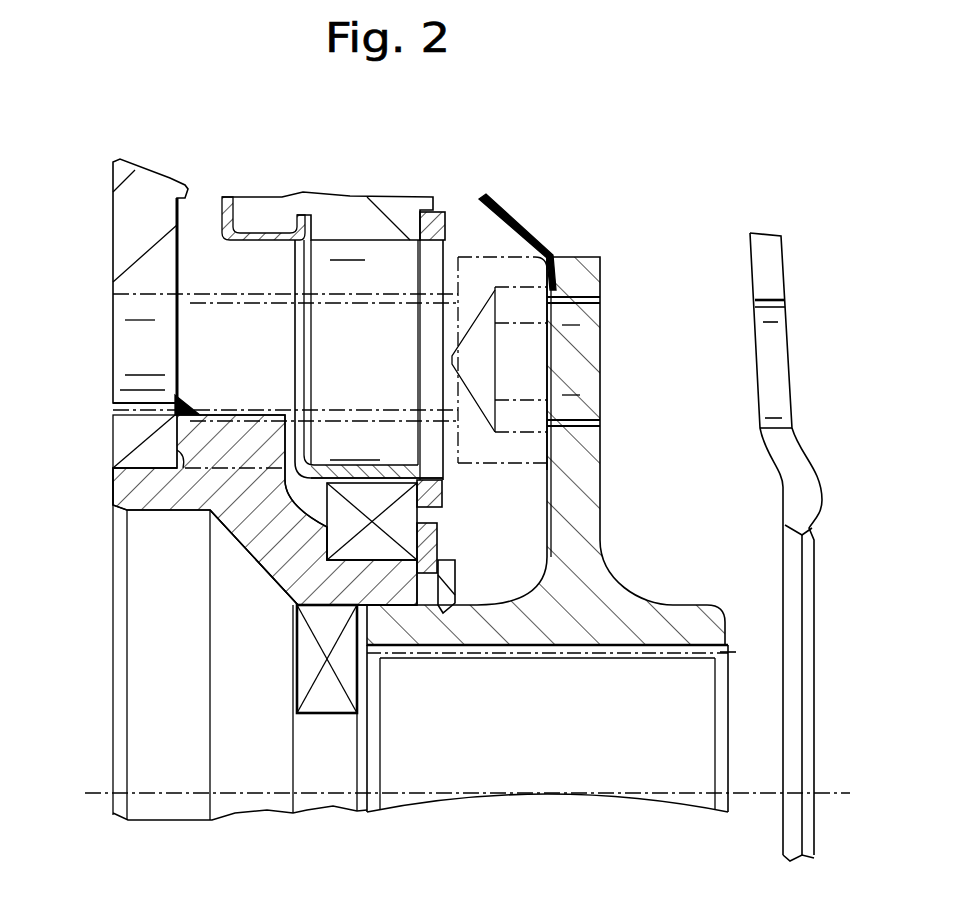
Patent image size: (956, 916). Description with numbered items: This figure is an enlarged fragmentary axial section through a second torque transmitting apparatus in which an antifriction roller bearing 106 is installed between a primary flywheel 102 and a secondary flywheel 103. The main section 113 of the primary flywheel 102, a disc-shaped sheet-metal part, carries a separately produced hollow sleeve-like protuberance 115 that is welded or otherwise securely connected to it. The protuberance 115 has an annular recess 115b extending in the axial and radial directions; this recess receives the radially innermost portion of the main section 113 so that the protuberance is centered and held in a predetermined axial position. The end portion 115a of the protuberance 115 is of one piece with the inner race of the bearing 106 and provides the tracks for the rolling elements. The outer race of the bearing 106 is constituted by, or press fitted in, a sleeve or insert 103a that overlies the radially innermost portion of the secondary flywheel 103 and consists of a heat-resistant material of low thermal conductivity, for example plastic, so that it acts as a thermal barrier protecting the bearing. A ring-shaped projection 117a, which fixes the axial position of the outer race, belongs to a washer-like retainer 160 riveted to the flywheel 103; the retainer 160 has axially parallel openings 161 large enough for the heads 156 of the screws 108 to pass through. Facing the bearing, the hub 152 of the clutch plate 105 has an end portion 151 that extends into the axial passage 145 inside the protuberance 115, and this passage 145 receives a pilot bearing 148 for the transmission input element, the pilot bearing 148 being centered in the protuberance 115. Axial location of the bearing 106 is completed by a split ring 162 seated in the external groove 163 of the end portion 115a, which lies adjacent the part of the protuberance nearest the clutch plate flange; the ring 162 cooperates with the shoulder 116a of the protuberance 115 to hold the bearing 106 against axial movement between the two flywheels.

The primary flywheel 102 is at (148, 190).
The main section 113 is at (130, 237).
The screws 108 is at (350, 290).
The secondary flywheel 103 is at (367, 223).
The retainer 160 is at (443, 263).
The openings 161 is at (492, 210).
The heads 156 is at (530, 377).
The sleeve or insert 103a is at (440, 480).
The ring-shaped projection 117a is at (440, 513).
The clutch plate 105 is at (573, 560).
The annular recess 115b is at (133, 470).
The protuberance 115 is at (247, 525).
The antifriction roller bearing 106 is at (322, 530).
The shoulder 116a is at (362, 593).
The end portion 115a is at (330, 630).
The axial passage 145 is at (257, 745).
The pilot bearing 148 is at (325, 697).
The end portion 151 is at (390, 633).
The external groove 163 is at (445, 613).
The split ring 162 is at (466, 605).
The hub 152 is at (587, 623).